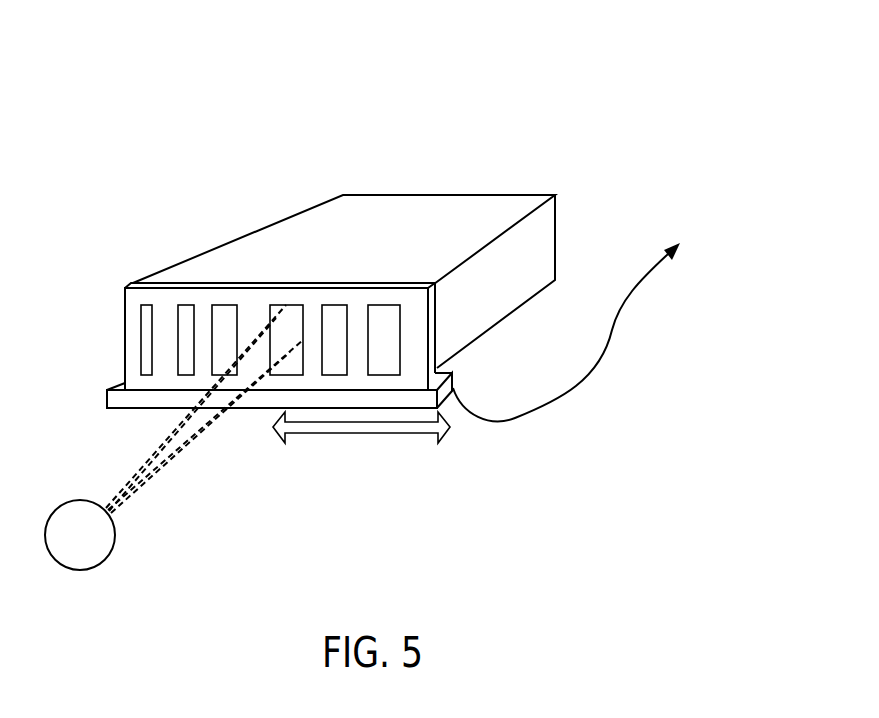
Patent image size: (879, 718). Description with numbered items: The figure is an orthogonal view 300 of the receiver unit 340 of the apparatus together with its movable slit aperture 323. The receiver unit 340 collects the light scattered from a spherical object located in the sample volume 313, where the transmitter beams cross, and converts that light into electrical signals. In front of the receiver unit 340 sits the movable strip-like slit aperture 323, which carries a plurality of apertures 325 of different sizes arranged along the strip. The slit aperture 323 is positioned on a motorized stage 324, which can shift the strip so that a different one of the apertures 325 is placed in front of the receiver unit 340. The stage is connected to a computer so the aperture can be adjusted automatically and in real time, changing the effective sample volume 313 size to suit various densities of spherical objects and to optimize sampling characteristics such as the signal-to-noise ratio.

The orthogonal view 300 is at (121, 97).
The sample volume 313 is at (174, 437).
The movable slit aperture 323 is at (132, 327).
The motorized stage 324 is at (307, 386).
The apertures 325 is at (220, 313).
The receiver unit 340 is at (420, 203).